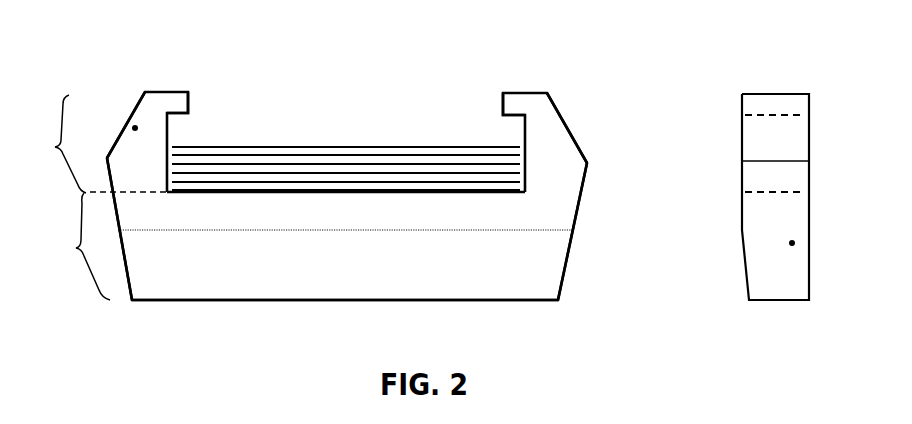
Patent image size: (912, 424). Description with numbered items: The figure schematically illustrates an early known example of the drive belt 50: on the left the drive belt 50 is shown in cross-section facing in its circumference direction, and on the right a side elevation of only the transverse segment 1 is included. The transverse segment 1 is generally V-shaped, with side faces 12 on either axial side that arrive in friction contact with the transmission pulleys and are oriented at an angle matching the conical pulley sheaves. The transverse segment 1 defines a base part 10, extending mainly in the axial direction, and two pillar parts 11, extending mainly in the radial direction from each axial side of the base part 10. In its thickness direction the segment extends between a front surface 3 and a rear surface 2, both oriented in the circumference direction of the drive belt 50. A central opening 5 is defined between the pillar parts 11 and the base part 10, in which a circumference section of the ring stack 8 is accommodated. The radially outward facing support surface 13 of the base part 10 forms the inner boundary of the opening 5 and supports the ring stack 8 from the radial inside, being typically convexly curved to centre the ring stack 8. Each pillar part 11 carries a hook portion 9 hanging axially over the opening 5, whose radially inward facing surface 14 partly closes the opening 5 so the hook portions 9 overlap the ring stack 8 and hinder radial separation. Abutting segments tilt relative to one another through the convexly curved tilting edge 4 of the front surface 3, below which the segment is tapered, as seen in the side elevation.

The transverse segment 1 is at (210, 300).
The rear surface 2 is at (812, 202).
The front surface 3 is at (135, 128).
The tilting edge 4 is at (288, 232).
The central opening 5 is at (355, 134).
The ring stack 8 is at (302, 146).
The hook portion 9 is at (188, 102).
The base part 10 is at (597, 282).
The pillar part 11 is at (600, 115).
The side face 12 is at (120, 265).
The support surface 13 is at (372, 197).
The radially inward facing surface 14 is at (176, 107).
The drive belt 50 is at (386, 68).